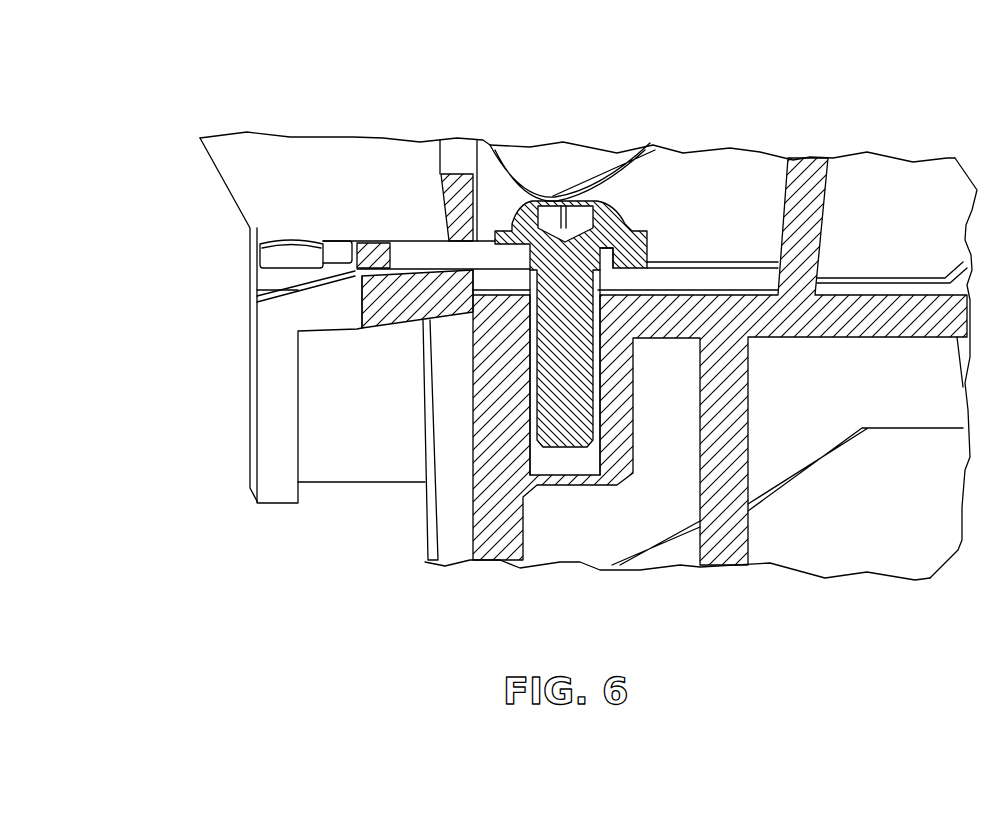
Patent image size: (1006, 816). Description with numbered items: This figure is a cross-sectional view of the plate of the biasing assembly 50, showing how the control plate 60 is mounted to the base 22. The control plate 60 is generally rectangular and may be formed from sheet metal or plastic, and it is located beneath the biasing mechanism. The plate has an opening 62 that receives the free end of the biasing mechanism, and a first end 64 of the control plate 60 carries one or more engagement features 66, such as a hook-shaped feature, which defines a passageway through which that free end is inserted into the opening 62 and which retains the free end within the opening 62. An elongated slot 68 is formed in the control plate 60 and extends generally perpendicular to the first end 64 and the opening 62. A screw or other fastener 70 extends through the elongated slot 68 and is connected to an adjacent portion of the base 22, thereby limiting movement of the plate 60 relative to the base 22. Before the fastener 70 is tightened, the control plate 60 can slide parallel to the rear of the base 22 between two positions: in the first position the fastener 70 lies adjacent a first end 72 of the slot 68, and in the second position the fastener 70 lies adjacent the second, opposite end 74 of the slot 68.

The base 22 is at (738, 182).
The mounting assembly 50 is at (285, 123).
The control plate 60 is at (375, 255).
The opening 62 is at (337, 248).
The first end 64 is at (260, 250).
The engagement feature 66 is at (310, 257).
The elongated slot 68 is at (460, 253).
The fastener 70 is at (565, 417).
The first end of the slot 72 is at (603, 256).
The second end of the slot 74 is at (407, 255).